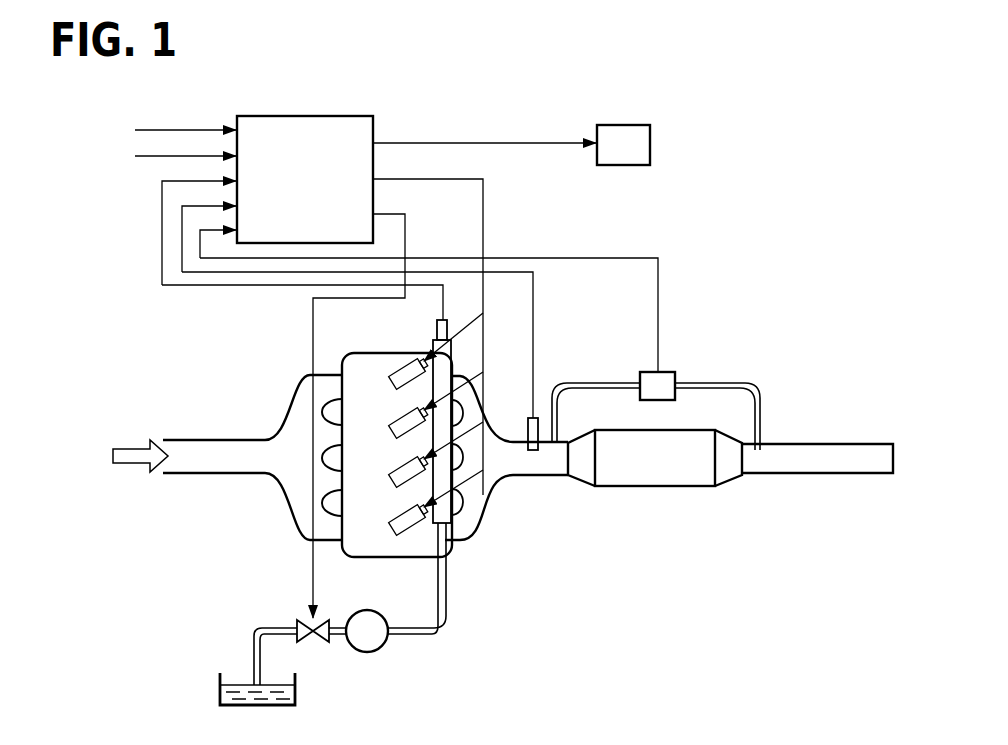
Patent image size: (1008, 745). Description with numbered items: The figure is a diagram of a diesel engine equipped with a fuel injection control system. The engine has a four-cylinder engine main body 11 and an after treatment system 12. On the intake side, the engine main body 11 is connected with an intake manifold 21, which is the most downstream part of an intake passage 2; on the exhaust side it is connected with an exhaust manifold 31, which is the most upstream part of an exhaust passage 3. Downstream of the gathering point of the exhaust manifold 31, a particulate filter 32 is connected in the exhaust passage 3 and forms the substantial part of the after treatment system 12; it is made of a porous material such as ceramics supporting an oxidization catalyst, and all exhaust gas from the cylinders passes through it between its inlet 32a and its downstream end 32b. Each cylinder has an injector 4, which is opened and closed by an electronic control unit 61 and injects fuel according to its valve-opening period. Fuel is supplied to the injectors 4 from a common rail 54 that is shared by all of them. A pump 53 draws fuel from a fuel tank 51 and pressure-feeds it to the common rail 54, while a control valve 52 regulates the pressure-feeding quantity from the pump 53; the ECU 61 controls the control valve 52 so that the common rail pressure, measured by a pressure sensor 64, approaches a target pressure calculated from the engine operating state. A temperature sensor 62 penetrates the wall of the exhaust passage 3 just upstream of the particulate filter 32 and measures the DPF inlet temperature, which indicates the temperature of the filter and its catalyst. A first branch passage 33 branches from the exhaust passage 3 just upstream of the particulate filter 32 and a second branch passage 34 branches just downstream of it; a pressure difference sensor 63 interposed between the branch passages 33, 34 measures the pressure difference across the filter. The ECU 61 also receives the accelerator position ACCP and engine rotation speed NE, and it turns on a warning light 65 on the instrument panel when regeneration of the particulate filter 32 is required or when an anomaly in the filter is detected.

The intake passage 2 is at (230, 418).
The intake manifold 21 is at (296, 475).
The injector 4 is at (412, 566).
The engine main body 11 is at (447, 580).
The after treatment system 12 is at (655, 539).
The exhaust passage 3 is at (782, 492).
The exhaust manifold 31 is at (477, 492).
The particulate filter 32 is at (655, 498).
The inlet of the particulate filter 32a is at (568, 458).
The downstream end of catalyst 32b is at (750, 460).
The first branch passage 33 is at (612, 383).
The second branch passage 34 is at (708, 383).
The fuel tank 51 is at (220, 692).
The control valve 52 is at (300, 622).
The pump 53 is at (380, 650).
The common rail 54 is at (441, 516).
The electronic control unit (ECU) 61 is at (373, 117).
The temperature sensor 62 is at (530, 418).
The pressure difference sensor 63 is at (670, 372).
The pressure sensor 64 is at (437, 332).
The warning light 65 is at (650, 147).